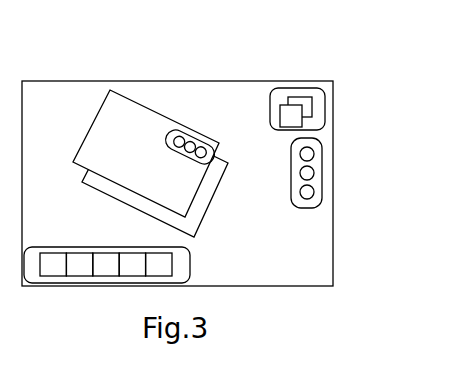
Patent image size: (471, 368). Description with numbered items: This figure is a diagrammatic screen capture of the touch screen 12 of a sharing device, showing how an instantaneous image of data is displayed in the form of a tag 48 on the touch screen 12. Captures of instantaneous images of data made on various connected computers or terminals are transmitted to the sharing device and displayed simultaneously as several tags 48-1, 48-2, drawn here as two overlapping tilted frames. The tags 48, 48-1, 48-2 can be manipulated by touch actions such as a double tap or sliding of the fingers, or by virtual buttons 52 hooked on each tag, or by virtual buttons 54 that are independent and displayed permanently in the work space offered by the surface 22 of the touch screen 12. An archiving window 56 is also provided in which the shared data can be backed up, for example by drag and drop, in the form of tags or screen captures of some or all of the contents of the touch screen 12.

The touch screen 12 is at (236, 178).
The surface 22 is at (277, 272).
The tag 48 is at (178, 124).
The tag 48-1 is at (148, 106).
The tag 48-2 is at (231, 155).
The virtual buttons 52 is at (198, 137).
The virtual buttons 54 is at (319, 157).
The archiving window 56 is at (328, 107).